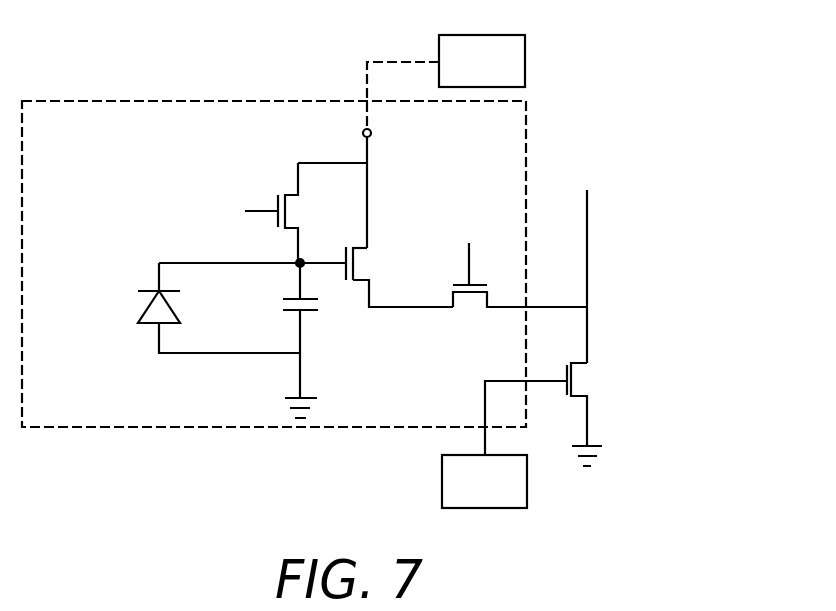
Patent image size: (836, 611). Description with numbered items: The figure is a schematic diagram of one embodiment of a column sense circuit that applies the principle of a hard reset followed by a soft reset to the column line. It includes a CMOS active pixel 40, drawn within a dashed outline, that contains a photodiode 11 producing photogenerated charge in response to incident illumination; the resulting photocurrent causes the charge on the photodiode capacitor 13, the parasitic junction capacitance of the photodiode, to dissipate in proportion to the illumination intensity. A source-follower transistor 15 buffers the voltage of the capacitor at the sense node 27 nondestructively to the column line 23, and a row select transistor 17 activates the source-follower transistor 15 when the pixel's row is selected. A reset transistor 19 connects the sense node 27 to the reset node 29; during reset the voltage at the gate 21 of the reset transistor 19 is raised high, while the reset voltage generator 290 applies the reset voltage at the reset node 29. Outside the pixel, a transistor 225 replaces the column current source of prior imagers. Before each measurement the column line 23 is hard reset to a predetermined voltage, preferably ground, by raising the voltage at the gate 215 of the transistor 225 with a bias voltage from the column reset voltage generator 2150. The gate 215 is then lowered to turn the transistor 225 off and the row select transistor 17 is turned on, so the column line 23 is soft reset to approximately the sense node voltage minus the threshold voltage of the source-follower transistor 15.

The photodiode 11 is at (140, 308).
The photodiode capacitor 13 is at (288, 302).
The source-follower transistor 15 is at (365, 262).
The row select transistor 17 is at (468, 309).
The reset transistor 19 is at (275, 226).
The gate of the reset transistor 21 is at (258, 206).
The column line 23 is at (589, 241).
The sense node 27 is at (301, 262).
The reset node 29 is at (372, 135).
The CMOS active pixel 40 is at (173, 99).
The gate of the transistor 215 is at (563, 370).
The transistor 225 is at (580, 380).
The reset voltage generator 290 is at (525, 62).
The column reset voltage generator 2150 is at (442, 482).